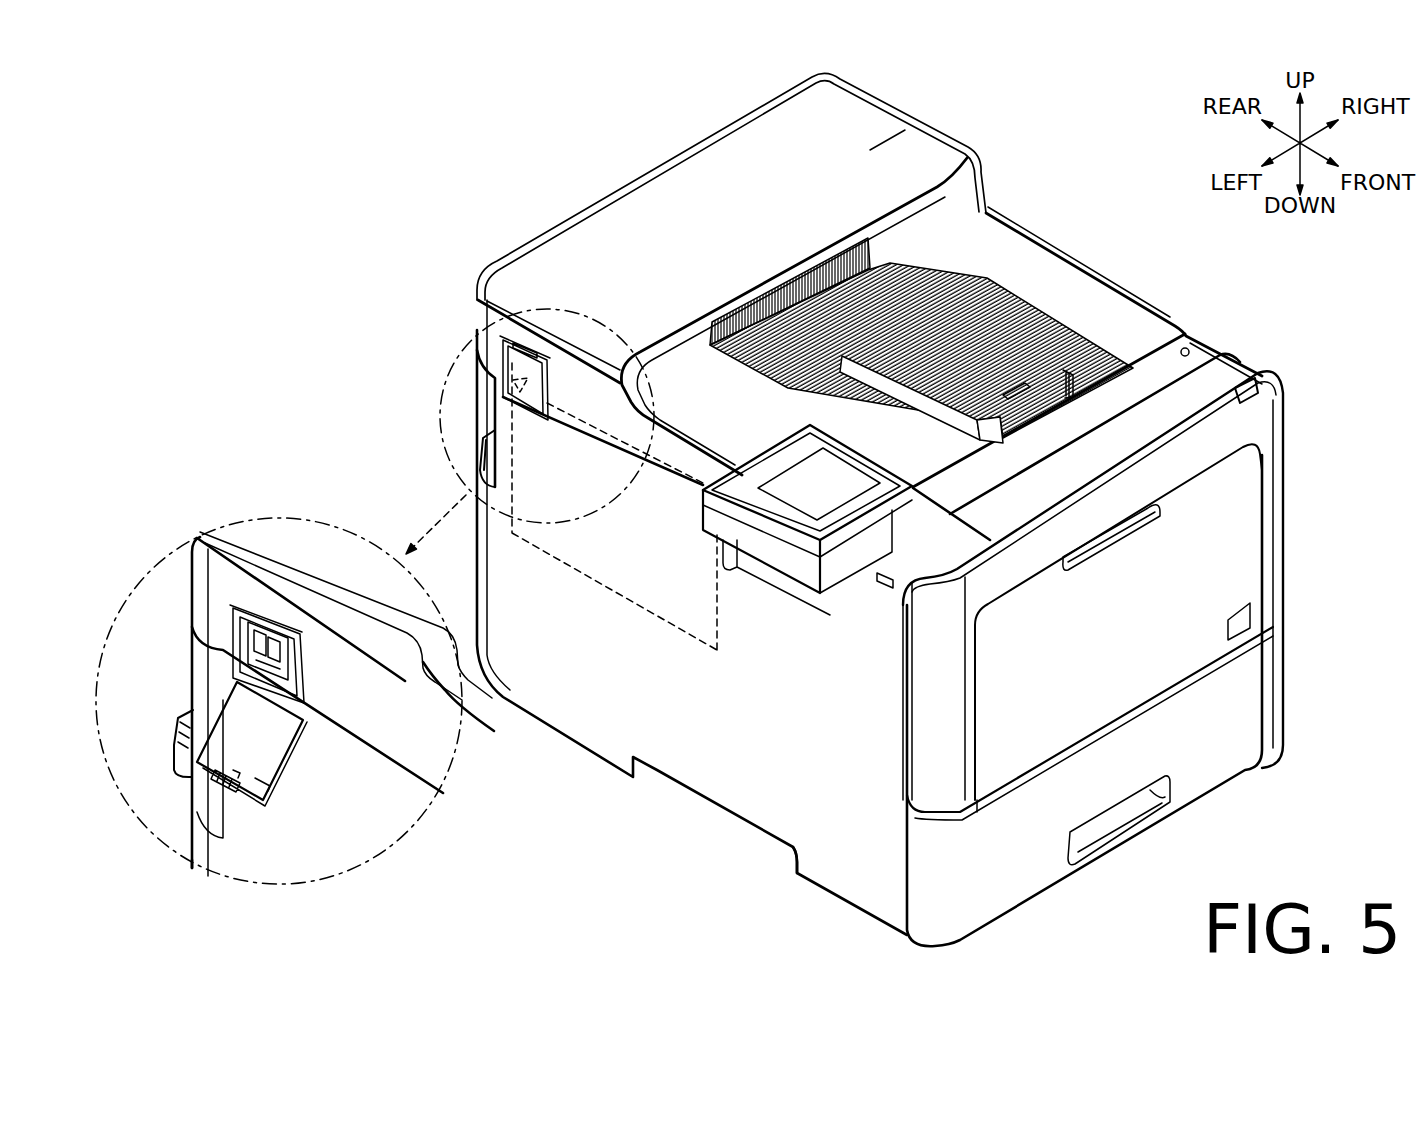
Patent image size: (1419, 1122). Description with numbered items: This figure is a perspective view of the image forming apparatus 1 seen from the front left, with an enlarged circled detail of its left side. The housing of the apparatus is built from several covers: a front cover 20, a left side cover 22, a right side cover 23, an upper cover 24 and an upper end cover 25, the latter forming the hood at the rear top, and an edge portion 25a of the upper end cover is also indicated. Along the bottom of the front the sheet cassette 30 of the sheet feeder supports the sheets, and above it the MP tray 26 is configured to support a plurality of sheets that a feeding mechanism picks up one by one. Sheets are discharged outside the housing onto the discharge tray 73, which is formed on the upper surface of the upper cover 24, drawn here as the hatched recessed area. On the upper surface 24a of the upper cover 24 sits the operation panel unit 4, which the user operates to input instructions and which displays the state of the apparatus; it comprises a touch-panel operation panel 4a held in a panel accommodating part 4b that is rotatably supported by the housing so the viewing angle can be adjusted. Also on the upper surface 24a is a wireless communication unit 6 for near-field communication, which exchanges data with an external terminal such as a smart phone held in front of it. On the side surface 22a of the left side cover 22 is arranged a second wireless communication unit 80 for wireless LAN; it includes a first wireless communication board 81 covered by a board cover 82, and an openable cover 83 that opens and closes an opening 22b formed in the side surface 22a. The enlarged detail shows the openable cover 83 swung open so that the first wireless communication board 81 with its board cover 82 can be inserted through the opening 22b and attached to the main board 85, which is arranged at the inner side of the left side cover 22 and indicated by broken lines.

The image forming apparatus 1 is at (525, 130).
The operation panel unit 4 is at (718, 522).
The operation panel 4a is at (815, 482).
The panel accommodating part 4b is at (710, 540).
The wireless communication unit 6 is at (920, 545).
The front cover 20 is at (1281, 535).
The left side cover 22 is at (708, 749).
The side surface 22a is at (818, 855).
The opening 22b is at (590, 328).
The right side cover 23 is at (1100, 267).
The upper cover 24 is at (695, 470).
The upper surface 24a is at (1046, 250).
The upper end cover 25 is at (713, 172).
The edge portion of top cover 25a is at (876, 134).
The MP tray 26 is at (1233, 490).
The sheet cassette 30 is at (1215, 768).
The discharge tray 73 is at (1047, 272).
The wireless communication unit 80 is at (497, 340).
The first wireless communication board 81 is at (505, 389).
The board cover 82 is at (264, 658).
The openable cover 83 is at (530, 372).
The main board 85 is at (497, 440).